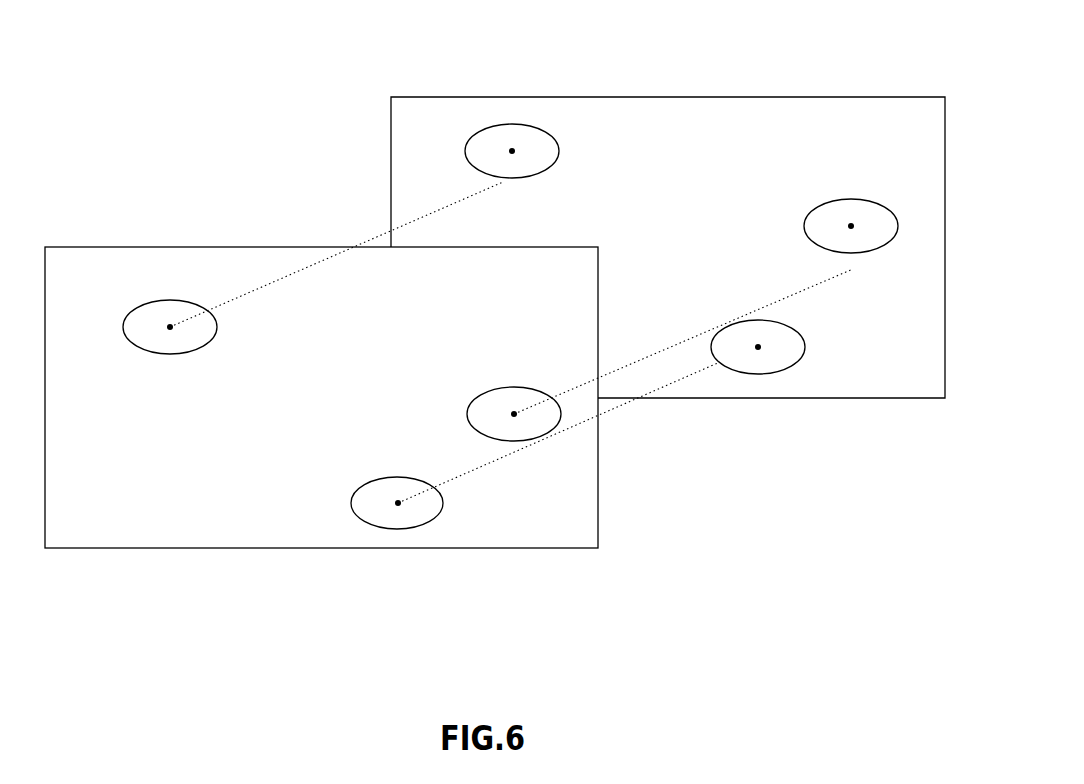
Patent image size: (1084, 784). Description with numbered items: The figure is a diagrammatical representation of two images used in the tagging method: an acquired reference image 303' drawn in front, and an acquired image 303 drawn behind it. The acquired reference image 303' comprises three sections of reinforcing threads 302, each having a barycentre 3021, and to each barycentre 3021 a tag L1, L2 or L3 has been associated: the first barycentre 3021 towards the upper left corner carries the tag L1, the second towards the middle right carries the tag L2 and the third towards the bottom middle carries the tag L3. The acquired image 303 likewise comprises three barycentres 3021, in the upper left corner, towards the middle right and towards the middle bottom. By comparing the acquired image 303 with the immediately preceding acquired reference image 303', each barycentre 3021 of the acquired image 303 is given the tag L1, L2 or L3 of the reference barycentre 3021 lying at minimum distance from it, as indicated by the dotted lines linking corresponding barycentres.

The acquired image 303 is at (668, 199).
The acquired reference image 303' is at (321, 347).
The section of reinforcing thread 302 is at (368, 510).
The barycentre 3021 is at (398, 514).
The tag L1 is at (170, 347).
The tag L2 is at (514, 396).
The tag L3 is at (385, 492).